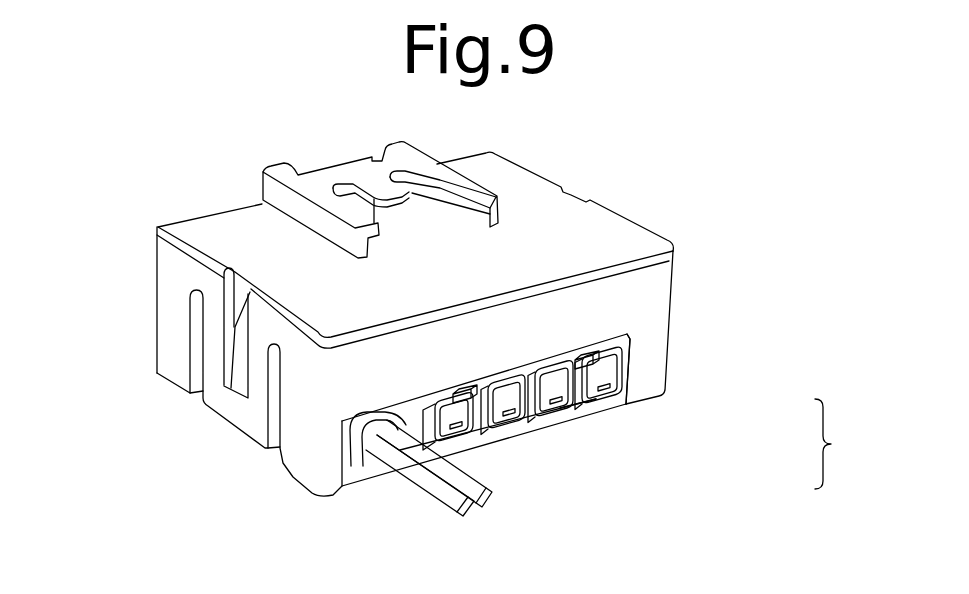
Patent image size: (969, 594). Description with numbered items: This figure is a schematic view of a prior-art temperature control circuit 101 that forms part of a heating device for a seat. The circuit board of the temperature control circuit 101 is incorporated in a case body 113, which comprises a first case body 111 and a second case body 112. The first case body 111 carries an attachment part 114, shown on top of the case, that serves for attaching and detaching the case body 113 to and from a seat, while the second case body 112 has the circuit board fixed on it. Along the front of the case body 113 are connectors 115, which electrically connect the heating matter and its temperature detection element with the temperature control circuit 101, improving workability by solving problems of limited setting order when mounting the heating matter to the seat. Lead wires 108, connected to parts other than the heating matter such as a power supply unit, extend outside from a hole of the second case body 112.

The temperature control circuit 101 is at (198, 436).
The lead wires 108 is at (412, 482).
The first case body 111 is at (653, 377).
The second case body 112 is at (597, 399).
The case body 113 is at (854, 444).
The attachment part 114 is at (260, 192).
The connectors 115 is at (520, 437).